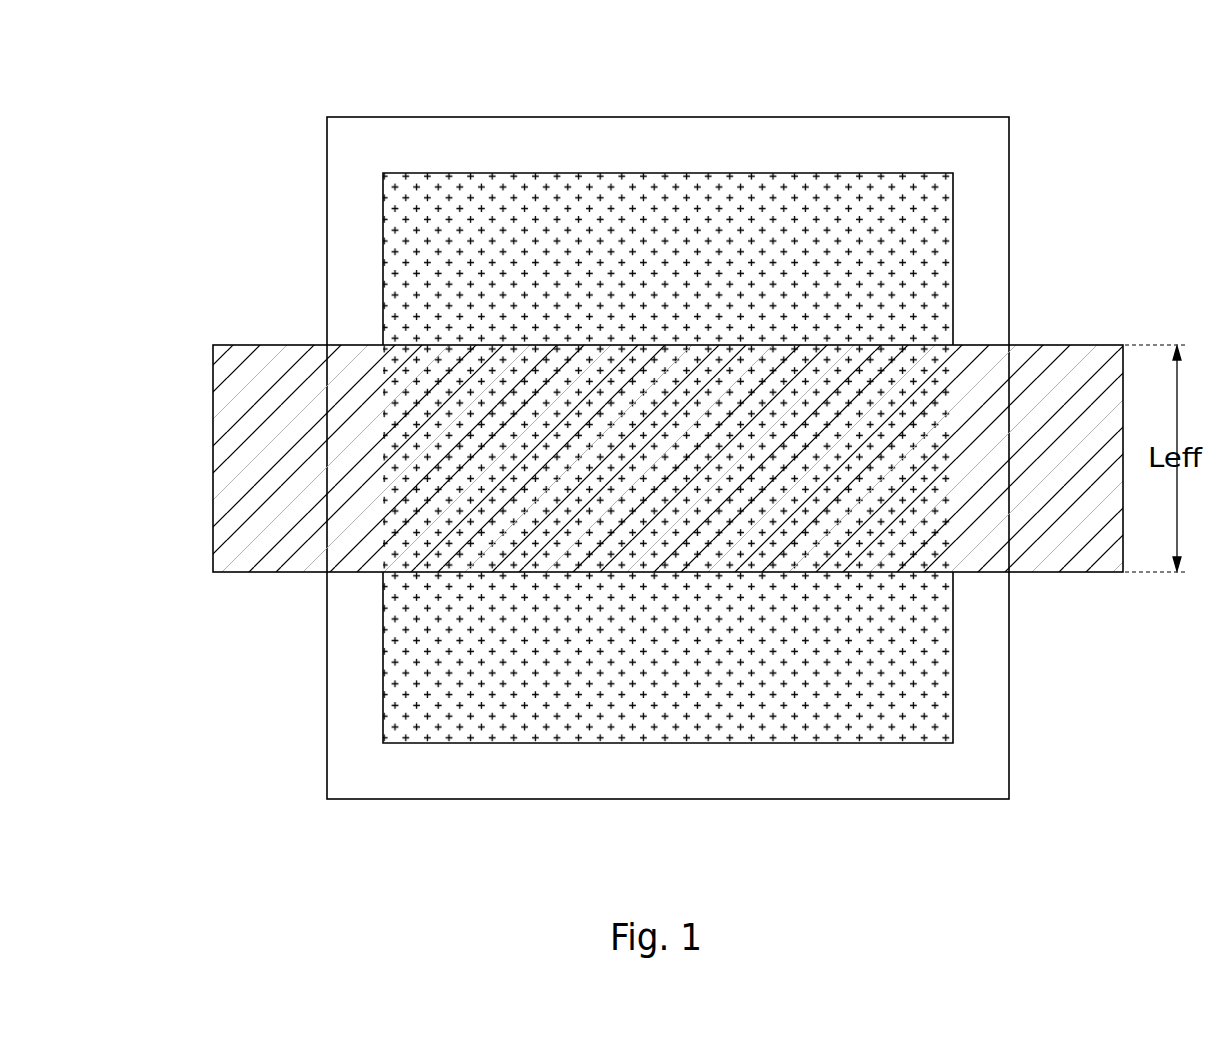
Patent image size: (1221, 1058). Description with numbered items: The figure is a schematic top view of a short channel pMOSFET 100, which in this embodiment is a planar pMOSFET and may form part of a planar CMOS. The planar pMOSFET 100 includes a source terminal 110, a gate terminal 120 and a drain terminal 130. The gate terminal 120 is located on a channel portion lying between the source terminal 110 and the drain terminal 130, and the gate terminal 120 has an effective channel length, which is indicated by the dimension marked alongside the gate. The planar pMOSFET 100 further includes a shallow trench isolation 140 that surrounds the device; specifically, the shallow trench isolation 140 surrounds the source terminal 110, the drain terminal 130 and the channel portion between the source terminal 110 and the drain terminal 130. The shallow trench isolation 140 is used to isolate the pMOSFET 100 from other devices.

The short channel pMOSFET 100 is at (147, 68).
The source terminal 110 is at (953, 229).
The gate terminal 120 is at (213, 408).
The drain terminal 130 is at (953, 667).
The shallow trench isolation 140 is at (667, 116).